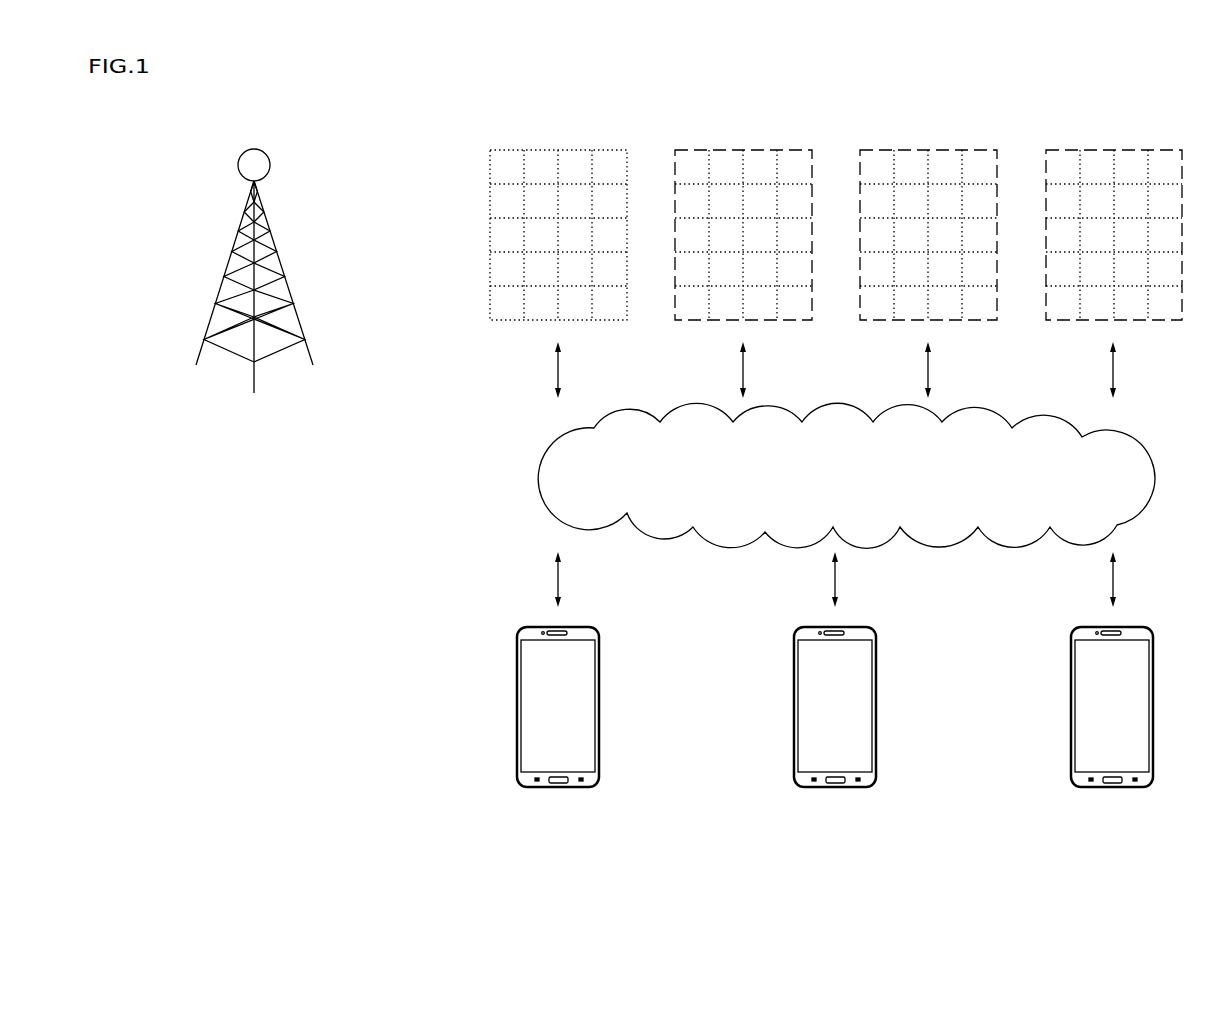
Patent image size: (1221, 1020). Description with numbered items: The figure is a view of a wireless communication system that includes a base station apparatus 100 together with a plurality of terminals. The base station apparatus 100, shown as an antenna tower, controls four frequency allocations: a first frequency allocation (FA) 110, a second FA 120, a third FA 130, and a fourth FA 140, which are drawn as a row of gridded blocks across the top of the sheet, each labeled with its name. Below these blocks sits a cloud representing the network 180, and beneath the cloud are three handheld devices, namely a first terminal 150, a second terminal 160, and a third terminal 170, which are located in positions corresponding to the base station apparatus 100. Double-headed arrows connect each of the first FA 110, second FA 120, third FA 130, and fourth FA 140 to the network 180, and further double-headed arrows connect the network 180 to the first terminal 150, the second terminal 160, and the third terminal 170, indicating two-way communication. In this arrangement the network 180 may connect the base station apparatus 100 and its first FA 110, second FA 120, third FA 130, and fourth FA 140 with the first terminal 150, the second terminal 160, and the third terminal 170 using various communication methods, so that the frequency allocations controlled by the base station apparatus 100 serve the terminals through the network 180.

The base station apparatus 100 is at (254, 148).
The first frequency allocation (FA) 110 is at (558, 115).
The second FA 120 is at (747, 115).
The third FA 130 is at (928, 115).
The fourth FA 140 is at (1113, 115).
The first terminal 150 is at (599, 705).
The second terminal 160 is at (876, 705).
The third terminal 170 is at (1153, 705).
The network 180 is at (1152, 482).